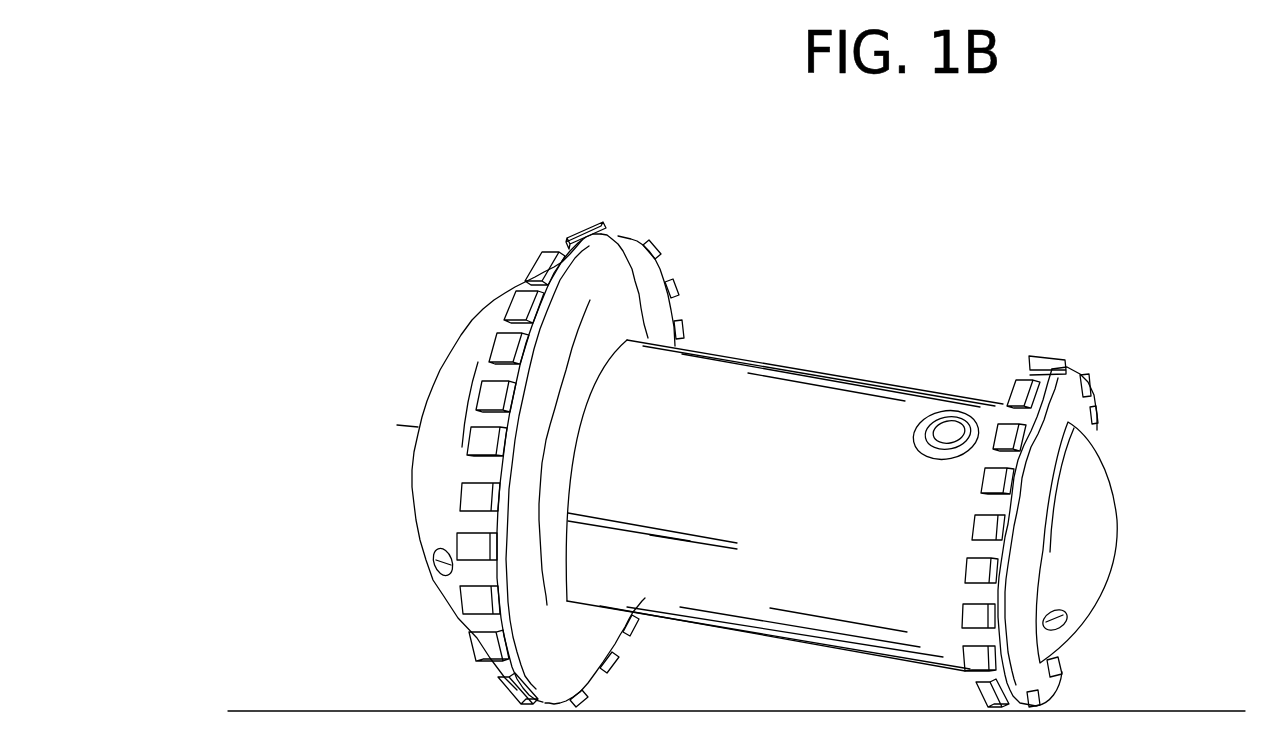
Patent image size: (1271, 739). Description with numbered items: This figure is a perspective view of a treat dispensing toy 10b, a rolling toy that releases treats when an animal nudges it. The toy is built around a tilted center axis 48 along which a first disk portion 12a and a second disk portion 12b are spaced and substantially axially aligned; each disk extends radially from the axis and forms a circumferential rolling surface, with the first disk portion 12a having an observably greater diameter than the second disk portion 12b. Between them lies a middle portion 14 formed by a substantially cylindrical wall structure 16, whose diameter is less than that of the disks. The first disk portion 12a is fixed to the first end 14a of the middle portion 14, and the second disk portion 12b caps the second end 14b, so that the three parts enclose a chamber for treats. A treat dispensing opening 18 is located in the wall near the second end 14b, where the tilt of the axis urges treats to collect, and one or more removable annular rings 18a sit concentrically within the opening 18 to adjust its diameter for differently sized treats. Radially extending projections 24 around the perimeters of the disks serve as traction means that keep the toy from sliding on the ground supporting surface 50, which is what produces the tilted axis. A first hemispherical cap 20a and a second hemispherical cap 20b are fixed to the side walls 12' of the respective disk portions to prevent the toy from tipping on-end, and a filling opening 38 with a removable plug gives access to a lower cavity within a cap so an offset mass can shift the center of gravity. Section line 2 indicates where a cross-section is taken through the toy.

The treat dispensing toy 10b is at (250, 206).
The first disk portion 12a is at (620, 205).
The second disk portion 12b is at (1068, 328).
The side wall 12' is at (1100, 517).
The middle portion 14 is at (856, 330).
The first end 14a is at (583, 450).
The second end 14b is at (967, 500).
The cylindrical wall structure 16 is at (697, 433).
The treat dispensing opening 18 is at (943, 428).
The removable annular ring 18a is at (912, 431).
The first hemispherical cap 20a is at (467, 350).
The second hemispherical cap 20b is at (1090, 492).
The radially extending projections 24 is at (657, 247).
The filling opening 38 is at (442, 572).
The tilted center axis 48 is at (407, 432).
The ground supporting surface 50 is at (303, 711).
The section line 2 is at (407, 416).